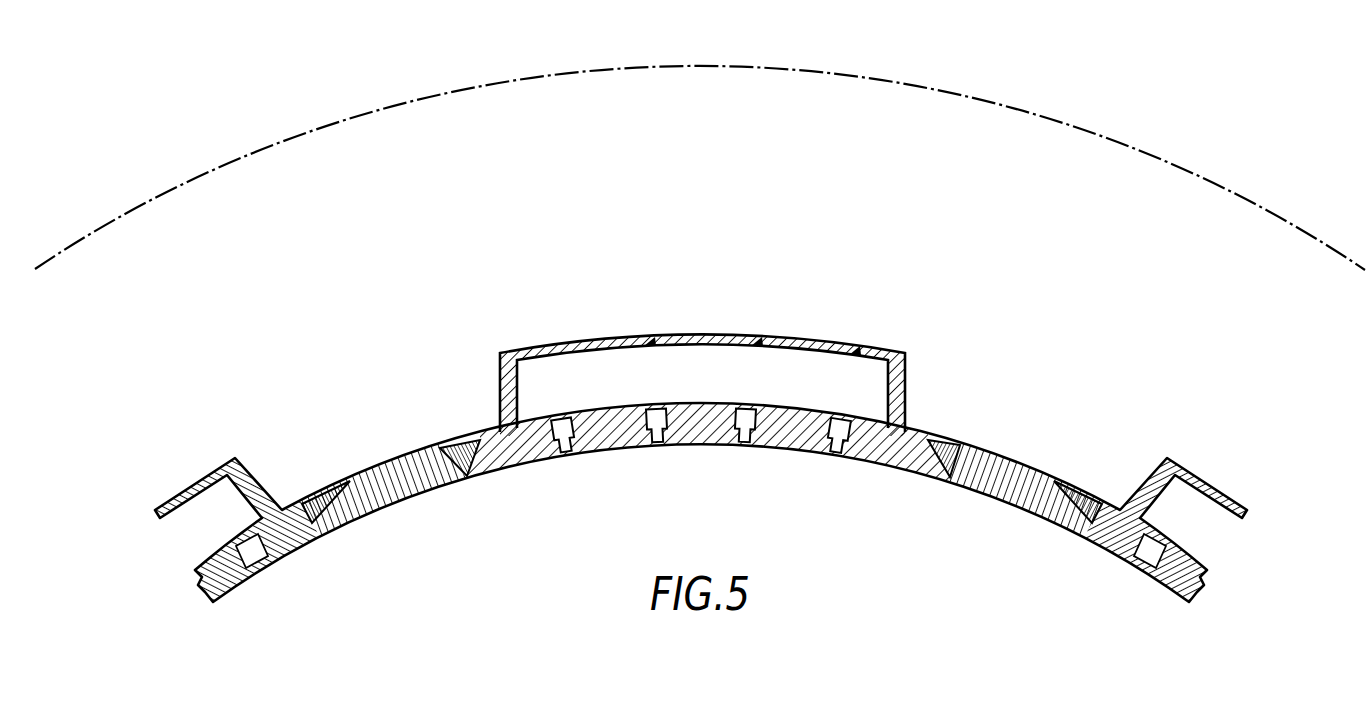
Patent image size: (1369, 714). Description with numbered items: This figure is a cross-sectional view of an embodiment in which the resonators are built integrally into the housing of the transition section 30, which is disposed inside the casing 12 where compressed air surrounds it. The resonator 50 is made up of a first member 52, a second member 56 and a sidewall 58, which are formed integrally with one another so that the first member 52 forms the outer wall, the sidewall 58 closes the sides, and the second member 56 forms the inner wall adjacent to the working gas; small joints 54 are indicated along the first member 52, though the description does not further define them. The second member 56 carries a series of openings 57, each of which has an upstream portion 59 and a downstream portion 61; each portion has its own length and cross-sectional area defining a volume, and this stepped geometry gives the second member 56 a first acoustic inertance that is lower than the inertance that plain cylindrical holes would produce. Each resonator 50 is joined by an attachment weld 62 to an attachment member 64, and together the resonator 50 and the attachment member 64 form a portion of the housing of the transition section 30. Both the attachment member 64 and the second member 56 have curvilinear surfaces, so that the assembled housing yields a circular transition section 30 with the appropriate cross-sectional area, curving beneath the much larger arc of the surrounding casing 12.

The casing 12 is at (1018, 108).
The transition section 30 is at (705, 412).
The resonator 50 is at (728, 374).
The first member 52 is at (718, 334).
The weld joints 54 is at (651, 340).
The second member 56 is at (708, 500).
The openings 57 is at (750, 452).
The sidewall 58 is at (907, 380).
The upstream portion 59 is at (561, 421).
The downstream portion 61 is at (565, 456).
The attachment weld 62 is at (458, 445).
The attachment member 64 is at (705, 510).